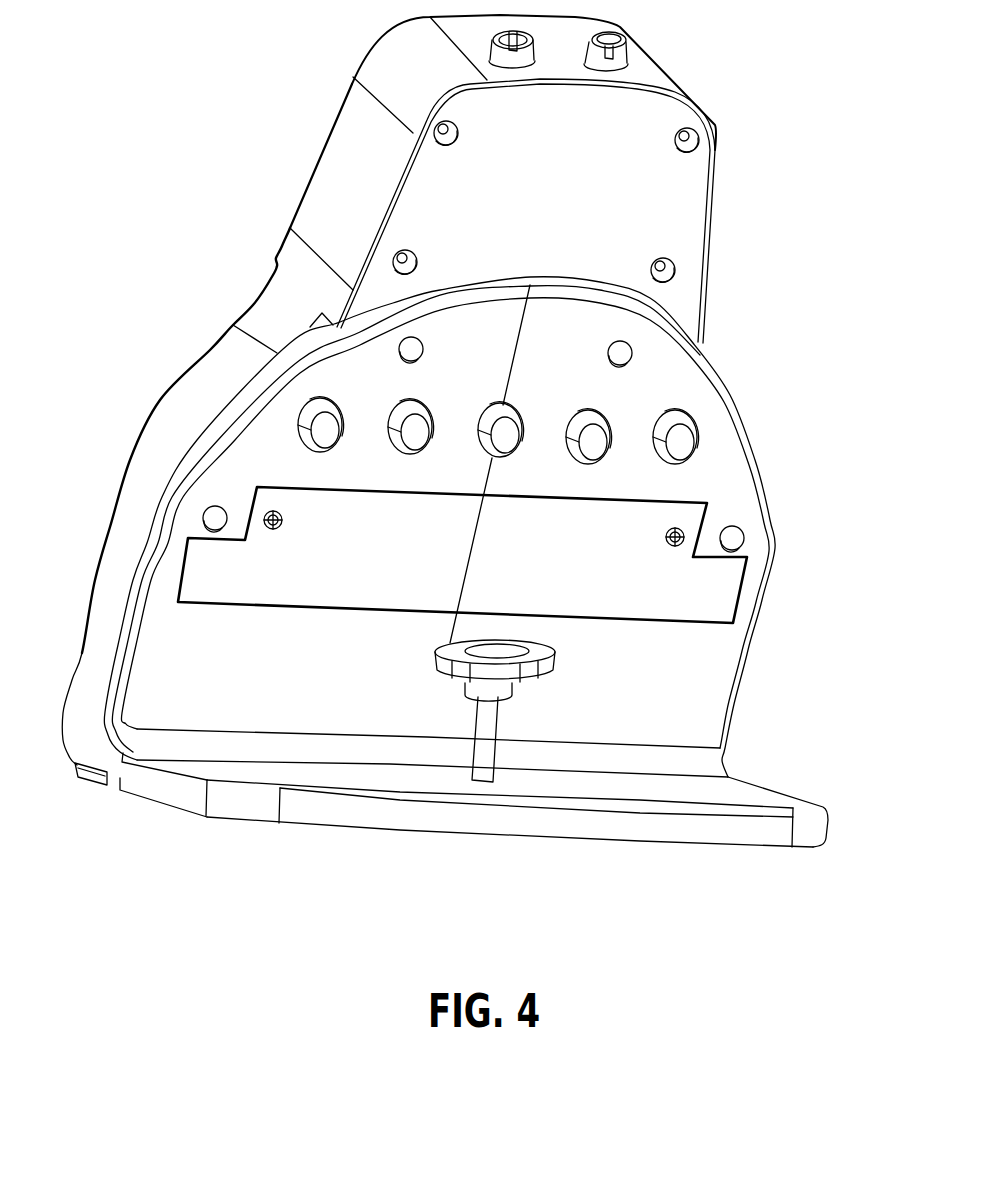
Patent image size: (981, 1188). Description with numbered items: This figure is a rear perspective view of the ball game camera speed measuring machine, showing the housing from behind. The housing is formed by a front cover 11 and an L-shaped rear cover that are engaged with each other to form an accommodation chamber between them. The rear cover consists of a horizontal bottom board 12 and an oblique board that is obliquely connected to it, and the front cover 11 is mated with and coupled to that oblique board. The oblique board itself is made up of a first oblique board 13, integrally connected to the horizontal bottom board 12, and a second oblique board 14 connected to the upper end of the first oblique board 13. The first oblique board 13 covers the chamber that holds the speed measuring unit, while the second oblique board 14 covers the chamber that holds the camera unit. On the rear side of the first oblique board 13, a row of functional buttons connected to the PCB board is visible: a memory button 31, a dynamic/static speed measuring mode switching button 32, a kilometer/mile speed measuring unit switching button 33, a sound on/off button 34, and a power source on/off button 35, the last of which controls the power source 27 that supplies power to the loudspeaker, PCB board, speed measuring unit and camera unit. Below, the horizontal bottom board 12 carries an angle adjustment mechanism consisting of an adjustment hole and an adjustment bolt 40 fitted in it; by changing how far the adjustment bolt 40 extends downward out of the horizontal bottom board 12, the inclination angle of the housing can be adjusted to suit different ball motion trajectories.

The front cover 11 is at (420, 223).
The horizontal bottom board 12 is at (203, 778).
The first oblique board 13 is at (200, 672).
The second oblique board 14 is at (526, 211).
The power source 27 is at (235, 575).
The memory button 31 is at (327, 432).
The dynamic/static speed measuring mode switching button 32 is at (410, 437).
The kilometer/mile speed measuring unit switching button 33 is at (507, 443).
The sound on/off button 34 is at (590, 450).
The power source on/off button 35 is at (675, 450).
The adjustment bolt 40 is at (493, 727).